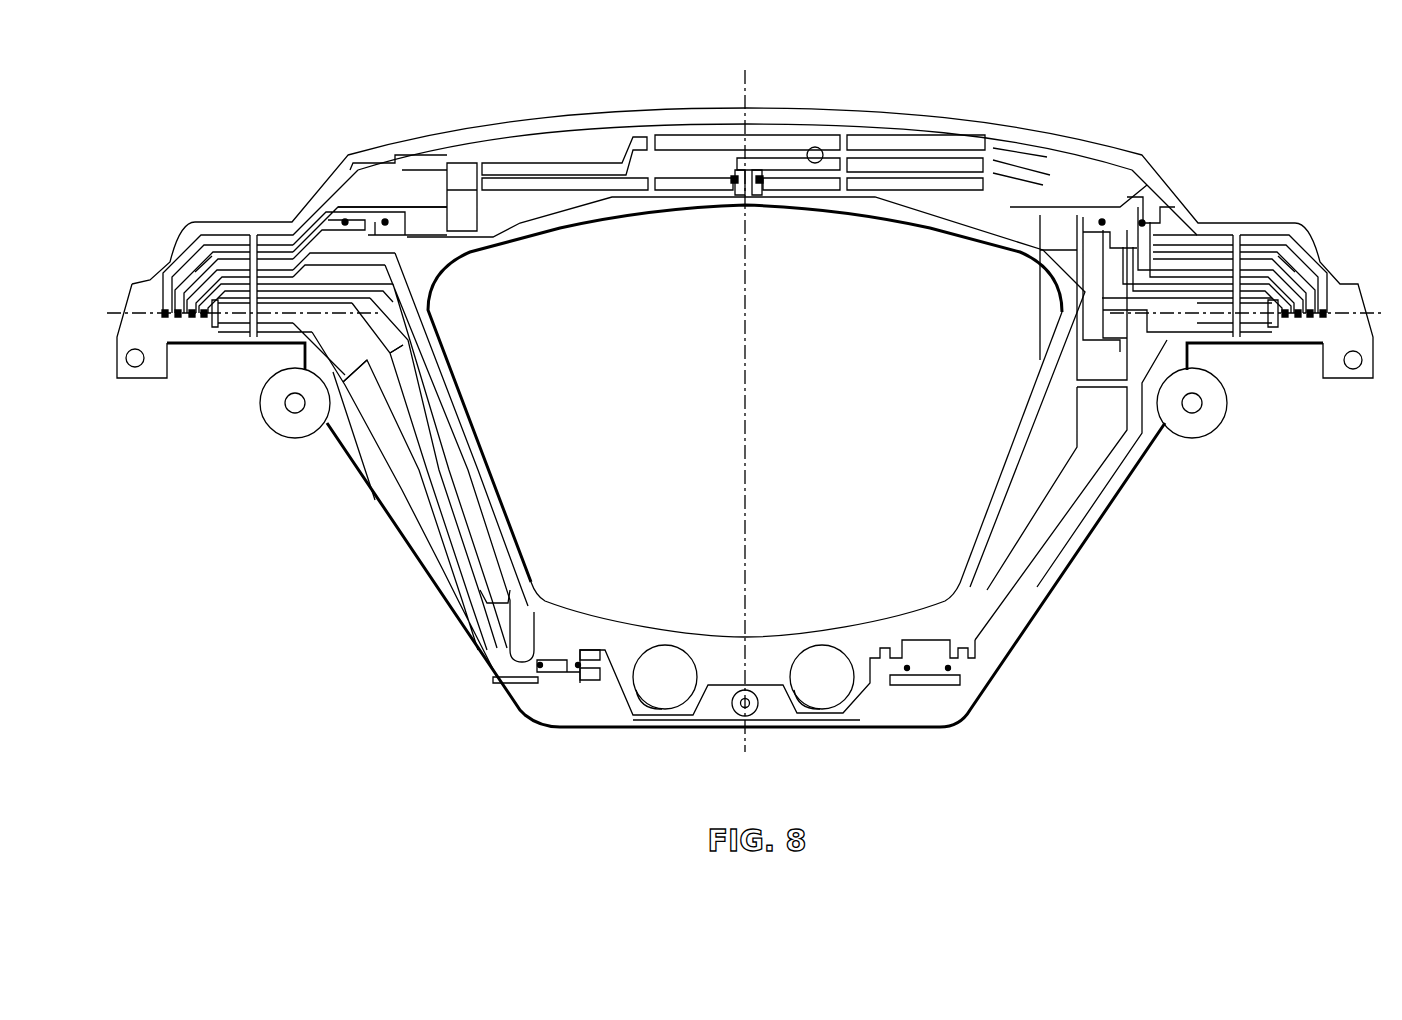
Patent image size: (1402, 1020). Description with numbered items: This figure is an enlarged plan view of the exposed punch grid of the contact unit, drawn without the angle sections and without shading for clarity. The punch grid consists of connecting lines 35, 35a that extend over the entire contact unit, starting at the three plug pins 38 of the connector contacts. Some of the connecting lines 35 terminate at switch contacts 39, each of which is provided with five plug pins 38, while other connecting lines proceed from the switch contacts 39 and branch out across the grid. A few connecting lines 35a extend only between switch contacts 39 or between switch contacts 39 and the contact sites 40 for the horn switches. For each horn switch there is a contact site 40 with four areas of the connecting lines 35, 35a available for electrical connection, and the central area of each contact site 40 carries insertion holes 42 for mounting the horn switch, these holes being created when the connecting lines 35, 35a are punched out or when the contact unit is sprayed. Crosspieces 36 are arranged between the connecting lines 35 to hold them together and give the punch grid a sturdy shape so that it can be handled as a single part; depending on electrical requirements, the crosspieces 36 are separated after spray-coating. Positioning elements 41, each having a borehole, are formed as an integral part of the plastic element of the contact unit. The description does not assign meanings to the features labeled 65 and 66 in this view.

The connecting lines 35 is at (563, 190).
The connecting lines 35a is at (665, 135).
The crosspieces 36 is at (480, 165).
The plug pins 38 is at (730, 178).
The switch contacts 39 is at (205, 276).
The contact sites 40 is at (368, 200).
The positioning elements 41 is at (125, 368).
The insertion holes 42 is at (540, 660).
The hole 65 is at (658, 690).
The window edge 66 is at (1005, 462).